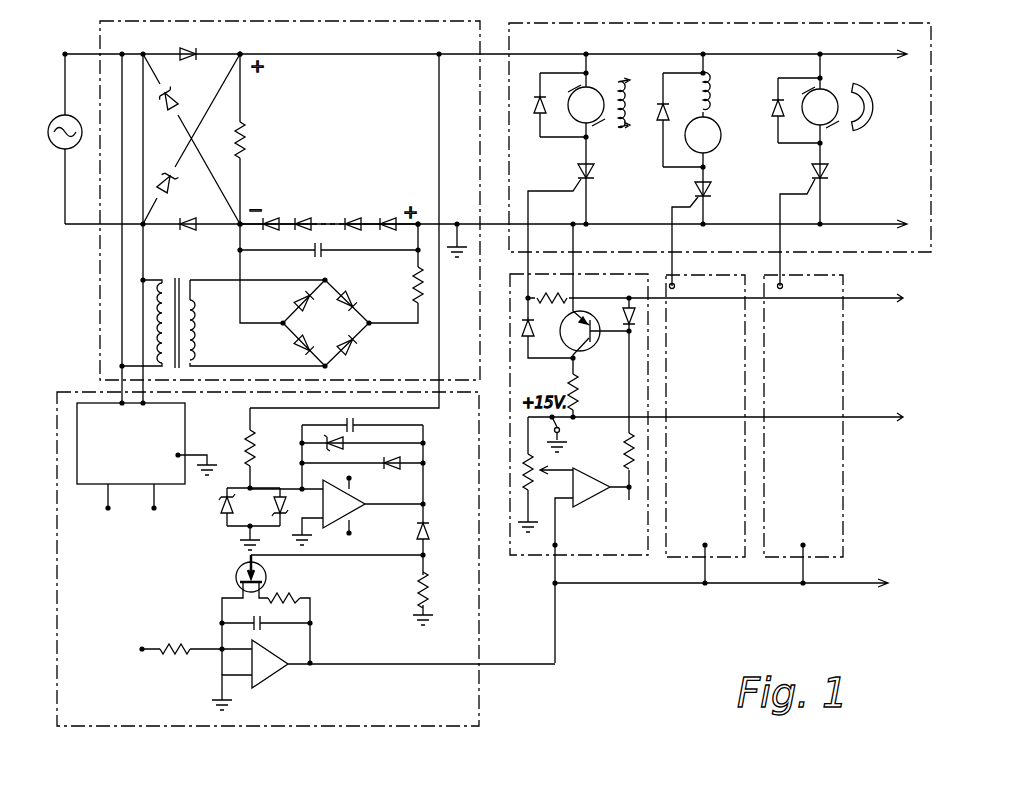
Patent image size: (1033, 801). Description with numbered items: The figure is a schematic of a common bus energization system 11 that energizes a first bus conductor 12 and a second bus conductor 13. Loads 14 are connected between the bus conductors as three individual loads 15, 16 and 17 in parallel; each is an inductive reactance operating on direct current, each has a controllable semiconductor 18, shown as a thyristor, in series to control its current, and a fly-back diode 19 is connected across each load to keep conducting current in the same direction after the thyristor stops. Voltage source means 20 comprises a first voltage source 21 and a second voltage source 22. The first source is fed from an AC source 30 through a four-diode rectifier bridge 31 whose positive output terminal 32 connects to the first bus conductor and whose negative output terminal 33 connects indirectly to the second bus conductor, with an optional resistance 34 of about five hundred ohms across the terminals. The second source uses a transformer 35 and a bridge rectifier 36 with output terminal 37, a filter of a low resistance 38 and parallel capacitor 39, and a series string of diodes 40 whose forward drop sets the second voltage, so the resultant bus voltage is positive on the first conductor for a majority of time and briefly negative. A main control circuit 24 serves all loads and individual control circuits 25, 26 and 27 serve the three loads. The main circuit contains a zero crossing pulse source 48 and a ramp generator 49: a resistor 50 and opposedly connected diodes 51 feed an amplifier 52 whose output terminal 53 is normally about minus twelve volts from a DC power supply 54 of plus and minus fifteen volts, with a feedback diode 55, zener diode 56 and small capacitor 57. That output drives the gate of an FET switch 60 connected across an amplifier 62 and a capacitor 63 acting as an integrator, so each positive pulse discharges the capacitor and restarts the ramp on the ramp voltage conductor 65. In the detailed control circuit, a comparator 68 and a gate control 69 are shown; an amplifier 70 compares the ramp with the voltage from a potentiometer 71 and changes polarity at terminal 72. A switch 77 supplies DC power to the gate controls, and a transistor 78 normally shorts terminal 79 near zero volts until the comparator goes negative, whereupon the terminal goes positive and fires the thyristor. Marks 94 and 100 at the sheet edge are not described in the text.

The common bus energization system 11 is at (593, 636).
The first bus conductor 12 is at (540, 54).
The second bus conductor 13 is at (607, 224).
The loads 14 is at (655, 23).
The first individual load 15 is at (598, 90).
The second individual load 16 is at (716, 120).
The third individual load 17 is at (832, 96).
The controllable semiconductor 18 is at (595, 170).
The fly-back diode 19 is at (536, 118).
The voltage source means 20 is at (367, 21).
The first voltage source 21 is at (224, 147).
The second voltage source 22 is at (408, 282).
The main control circuit 24 is at (481, 703).
The individual control circuit 25 is at (573, 555).
The individual control circuit 26 is at (668, 530).
The individual control circuit 27 is at (766, 530).
The AC source 30 is at (58, 112).
The four-diode rectifier bridge 31 is at (160, 178).
The output terminal 32 is at (245, 52).
The output terminal 33 is at (238, 230).
The optional resistance 34 is at (246, 136).
The transformer 35 is at (182, 283).
The bridge rectifier 36 is at (338, 332).
The output terminal 37 is at (418, 220).
The low resistance 38 is at (414, 290).
The capacitor 39 is at (322, 253).
The series string of diodes 40 is at (353, 215).
The zero crossing pulse source 48 is at (288, 446).
The ramp generator 49 is at (346, 638).
The resistor 50 is at (245, 447).
The opposedly connected diodes 51 is at (272, 508).
The amplifier 52 is at (340, 528).
The output terminal 53 is at (425, 502).
The DC power supply 54 is at (185, 420).
The diode 55 is at (394, 471).
The zener diode 56 is at (340, 448).
The small capacitor 57 is at (356, 428).
The FET switch 60 is at (266, 577).
The amplifier 62 is at (280, 675).
The capacitor 63 is at (264, 627).
The ramp voltage conductor 65 is at (658, 586).
The comparator 68 is at (660, 466).
The gate control 69 is at (626, 368).
The amplifier 70 is at (590, 478).
The potentiometer 71 is at (540, 465).
The terminal 72 is at (630, 498).
The switch 77 is at (560, 420).
The transistor 78 is at (580, 352).
The terminal 79 is at (570, 360).
The reference numeral (adjacent figure) 94 is at (838, 800).
The reference numeral (adjacent figure) 100 is at (552, 800).